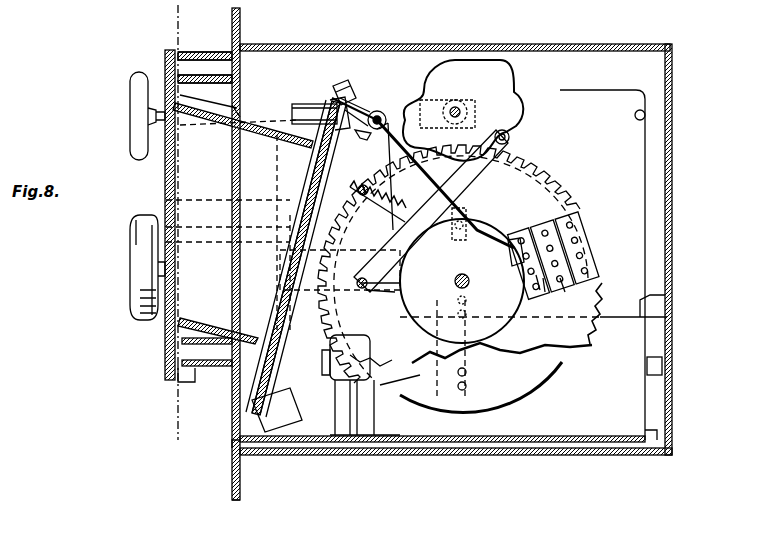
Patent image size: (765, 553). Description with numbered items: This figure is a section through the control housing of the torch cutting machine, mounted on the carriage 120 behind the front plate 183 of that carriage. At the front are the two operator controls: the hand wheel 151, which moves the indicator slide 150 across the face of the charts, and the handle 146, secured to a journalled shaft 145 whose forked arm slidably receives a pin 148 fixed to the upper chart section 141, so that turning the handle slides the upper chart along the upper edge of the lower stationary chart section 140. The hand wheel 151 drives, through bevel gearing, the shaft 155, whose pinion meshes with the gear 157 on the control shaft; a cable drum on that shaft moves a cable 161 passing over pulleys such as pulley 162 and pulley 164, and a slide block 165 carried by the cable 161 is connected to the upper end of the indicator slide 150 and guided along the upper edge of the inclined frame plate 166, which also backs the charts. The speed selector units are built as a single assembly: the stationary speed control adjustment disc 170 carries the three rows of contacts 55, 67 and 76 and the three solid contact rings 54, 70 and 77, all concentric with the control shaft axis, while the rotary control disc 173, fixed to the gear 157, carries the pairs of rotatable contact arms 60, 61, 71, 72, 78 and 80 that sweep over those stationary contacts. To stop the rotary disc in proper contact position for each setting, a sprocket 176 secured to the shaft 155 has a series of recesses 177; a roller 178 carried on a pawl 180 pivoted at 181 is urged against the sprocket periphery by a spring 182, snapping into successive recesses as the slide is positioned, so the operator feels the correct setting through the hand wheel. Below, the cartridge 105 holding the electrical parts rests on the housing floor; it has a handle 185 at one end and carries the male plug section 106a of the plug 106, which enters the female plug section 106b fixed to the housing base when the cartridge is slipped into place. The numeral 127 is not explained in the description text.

The front plate 183 is at (177, 22).
The hand wheel 151 is at (138, 90).
The handle 146 is at (130, 290).
The shaft 145 is at (238, 245).
The pin 148 is at (270, 148).
The upper chart section 141 is at (300, 178).
The shaft 127 is at (275, 203).
The indicator slide 150 is at (275, 302).
The lower stationary chart section 140 is at (262, 330).
The frame plate 166 is at (277, 410).
The pulley 162 is at (334, 103).
The slide block 165 is at (345, 90).
The pulley 164 is at (380, 112).
The recesses 177 is at (425, 90).
The shaft 155 is at (458, 100).
The sprocket 176 is at (516, 118).
The roller 178 is at (512, 134).
The plug 106 is at (340, 342).
The solid contact ring 54 is at (462, 281).
The row of contacts 55 is at (520, 258).
The cable 161 is at (478, 205).
The rotatable contact arm 72 is at (468, 200).
The rotatable contact arm 71 is at (423, 173).
The spring 182 is at (378, 225).
The pawl 180 is at (380, 272).
The pivot 181 is at (380, 290).
The row of contacts 67 is at (572, 226).
The solid contact ring 70 is at (575, 250).
The speed control adjustment disc 170 is at (585, 262).
The solid contact ring 77 is at (534, 292).
The row of contacts 76 is at (565, 293).
The handle 185 is at (662, 370).
The cartridge 105 is at (646, 412).
The rotatable contact arm 80 is at (430, 348).
The rotatable contact arm 60 is at (470, 380).
The rotatable contact arm 61 is at (480, 340).
The gear 157 is at (590, 344).
The rotary control disc 173 is at (548, 378).
The rotatable contact arm 78 is at (403, 387).
The male plug section 106a is at (348, 355).
The female plug section 106b is at (330, 400).
The carriage 120 is at (238, 500).